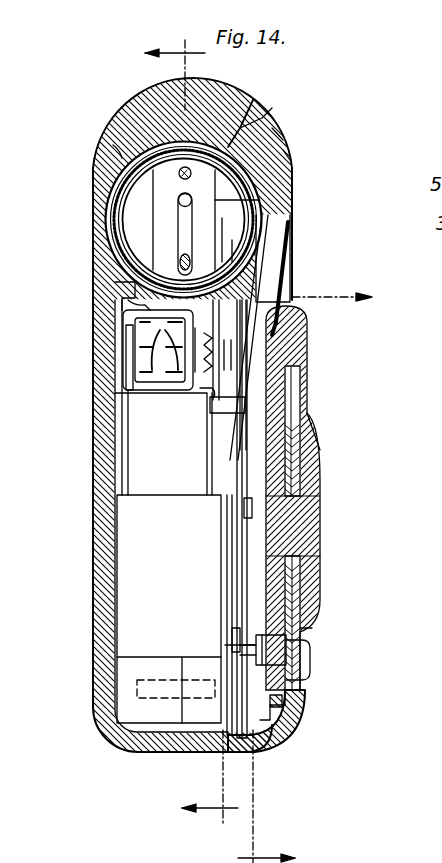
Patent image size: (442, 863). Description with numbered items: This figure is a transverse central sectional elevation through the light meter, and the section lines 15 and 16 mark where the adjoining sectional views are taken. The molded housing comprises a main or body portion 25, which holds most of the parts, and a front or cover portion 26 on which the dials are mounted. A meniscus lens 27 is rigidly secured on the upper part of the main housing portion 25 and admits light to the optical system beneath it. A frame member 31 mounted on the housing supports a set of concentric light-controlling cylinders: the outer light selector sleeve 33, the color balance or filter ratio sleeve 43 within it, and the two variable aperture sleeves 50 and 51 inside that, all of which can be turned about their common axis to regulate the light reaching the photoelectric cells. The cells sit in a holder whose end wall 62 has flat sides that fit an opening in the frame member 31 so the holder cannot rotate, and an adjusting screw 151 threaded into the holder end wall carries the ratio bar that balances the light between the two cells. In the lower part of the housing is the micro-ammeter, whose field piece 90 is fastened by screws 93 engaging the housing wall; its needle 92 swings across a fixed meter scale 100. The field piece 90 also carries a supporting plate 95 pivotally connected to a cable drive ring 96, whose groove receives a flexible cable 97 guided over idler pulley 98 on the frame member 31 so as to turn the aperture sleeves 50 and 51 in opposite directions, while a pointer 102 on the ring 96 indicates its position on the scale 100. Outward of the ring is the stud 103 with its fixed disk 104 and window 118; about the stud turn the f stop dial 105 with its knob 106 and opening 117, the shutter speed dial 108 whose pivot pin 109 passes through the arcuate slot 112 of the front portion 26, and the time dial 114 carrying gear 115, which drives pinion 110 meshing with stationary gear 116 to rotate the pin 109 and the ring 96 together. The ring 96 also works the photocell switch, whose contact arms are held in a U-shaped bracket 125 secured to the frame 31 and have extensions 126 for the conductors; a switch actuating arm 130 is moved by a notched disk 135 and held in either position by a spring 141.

The section line 15— 15 is at (220, 440).
The section line 16— 16 is at (345, 297).
The main housing portion 25 is at (96, 190).
The front housing portion 26 is at (294, 183).
The lens 27 is at (130, 97).
The frame member 31 is at (112, 296).
The light selector sleeve 33 is at (253, 100).
The color balance sleeve 43 is at (272, 110).
The outer variable aperture sleeve 50 is at (283, 140).
The inner variable aperture sleeve 51 is at (289, 157).
The end wall of photocell holder 62 is at (258, 200).
The field piece 90 is at (132, 570).
The meter needle 92 is at (272, 345).
The screws 93 is at (137, 685).
The supporting plate 95 is at (228, 600).
The cable drive ring 96 is at (252, 513).
The flexible cable 97 is at (140, 477).
The idler pulley 98 is at (126, 349).
The meter scale 100 is at (288, 262).
The pointer 102 is at (290, 240).
The stud 103 is at (280, 528).
The disk 104 is at (318, 455).
The f stop dial 105 is at (300, 618).
The knob 106 is at (312, 655).
The shutter speed dial 108 is at (300, 410).
The pivot pin 109 is at (236, 628).
The pinion 110 is at (312, 628).
The arcuate slot 112 is at (300, 602).
The time dial 114 is at (285, 712).
The gear 115 is at (308, 436).
The stationary gear 116 is at (292, 702).
The opening 117 is at (300, 395).
The window 118 is at (312, 620).
The supporting bracket 125 is at (123, 312).
The contact arm extensions 126 is at (161, 347).
The switch actuating arm 130 is at (210, 388).
The notched disk 135 is at (262, 318).
The spring 141 is at (210, 405).
The adjusting screw 151 is at (112, 145).